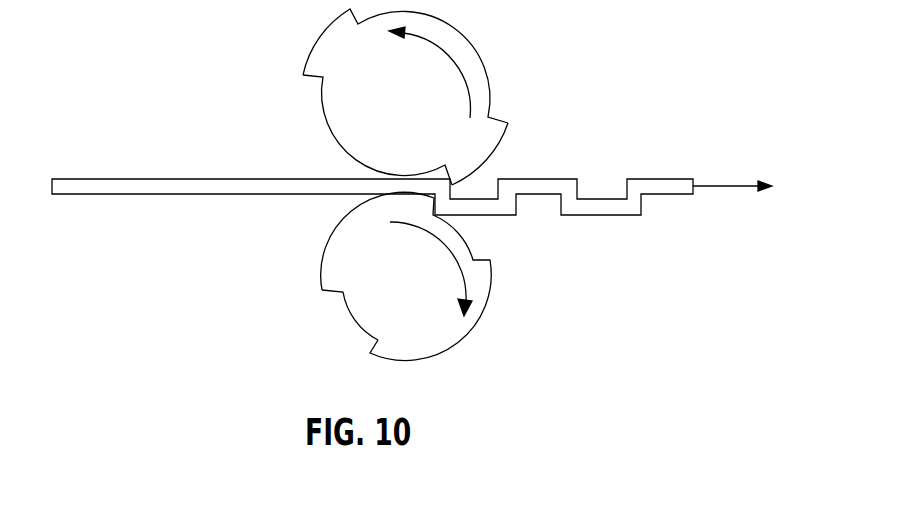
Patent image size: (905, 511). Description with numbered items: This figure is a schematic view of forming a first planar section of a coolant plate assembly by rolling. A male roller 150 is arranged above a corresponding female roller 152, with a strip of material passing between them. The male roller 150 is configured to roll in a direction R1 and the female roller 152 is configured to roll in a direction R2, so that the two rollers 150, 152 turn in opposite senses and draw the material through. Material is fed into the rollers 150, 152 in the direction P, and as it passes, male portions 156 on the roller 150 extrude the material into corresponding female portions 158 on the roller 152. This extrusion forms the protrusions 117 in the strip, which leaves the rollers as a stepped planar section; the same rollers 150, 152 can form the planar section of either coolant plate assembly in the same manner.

The protrusions 117 is at (610, 215).
The male roller 150 is at (417, 97).
The female roller 152 is at (393, 276).
The male portions 156 is at (490, 131).
The female portions 158 is at (353, 320).
The direction of rotation of male roller R1 is at (463, 72).
The direction of rotation of female roller R2 is at (459, 266).
The feed direction P is at (743, 187).